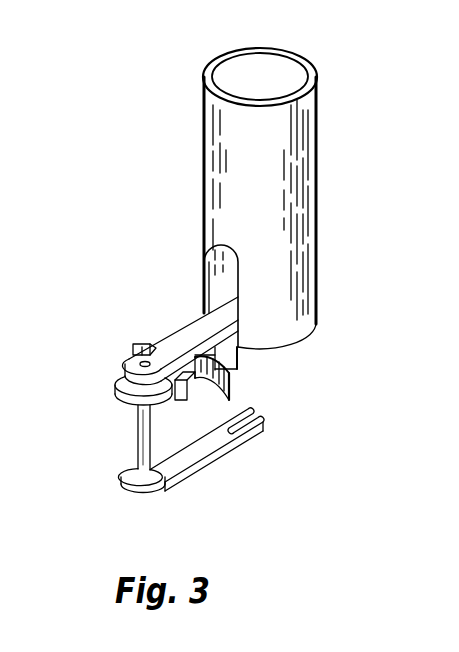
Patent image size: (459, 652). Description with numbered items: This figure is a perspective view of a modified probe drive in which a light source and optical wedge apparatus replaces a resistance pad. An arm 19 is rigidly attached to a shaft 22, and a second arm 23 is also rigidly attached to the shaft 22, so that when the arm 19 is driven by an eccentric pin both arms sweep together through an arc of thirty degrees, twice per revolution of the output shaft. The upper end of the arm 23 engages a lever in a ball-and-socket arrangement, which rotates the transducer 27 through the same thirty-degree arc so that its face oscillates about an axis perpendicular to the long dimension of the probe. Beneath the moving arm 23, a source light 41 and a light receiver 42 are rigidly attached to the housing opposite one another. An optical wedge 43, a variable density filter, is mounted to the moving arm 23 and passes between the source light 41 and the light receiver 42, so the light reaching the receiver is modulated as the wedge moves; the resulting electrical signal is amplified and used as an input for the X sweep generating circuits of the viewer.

The transducer 27 is at (265, 72).
The arm 23 is at (183, 327).
The source light 41 is at (232, 360).
The optical wedge 43 is at (230, 378).
The light receiver 42 is at (183, 383).
The shaft 22 is at (137, 428).
The arm 19 is at (125, 487).